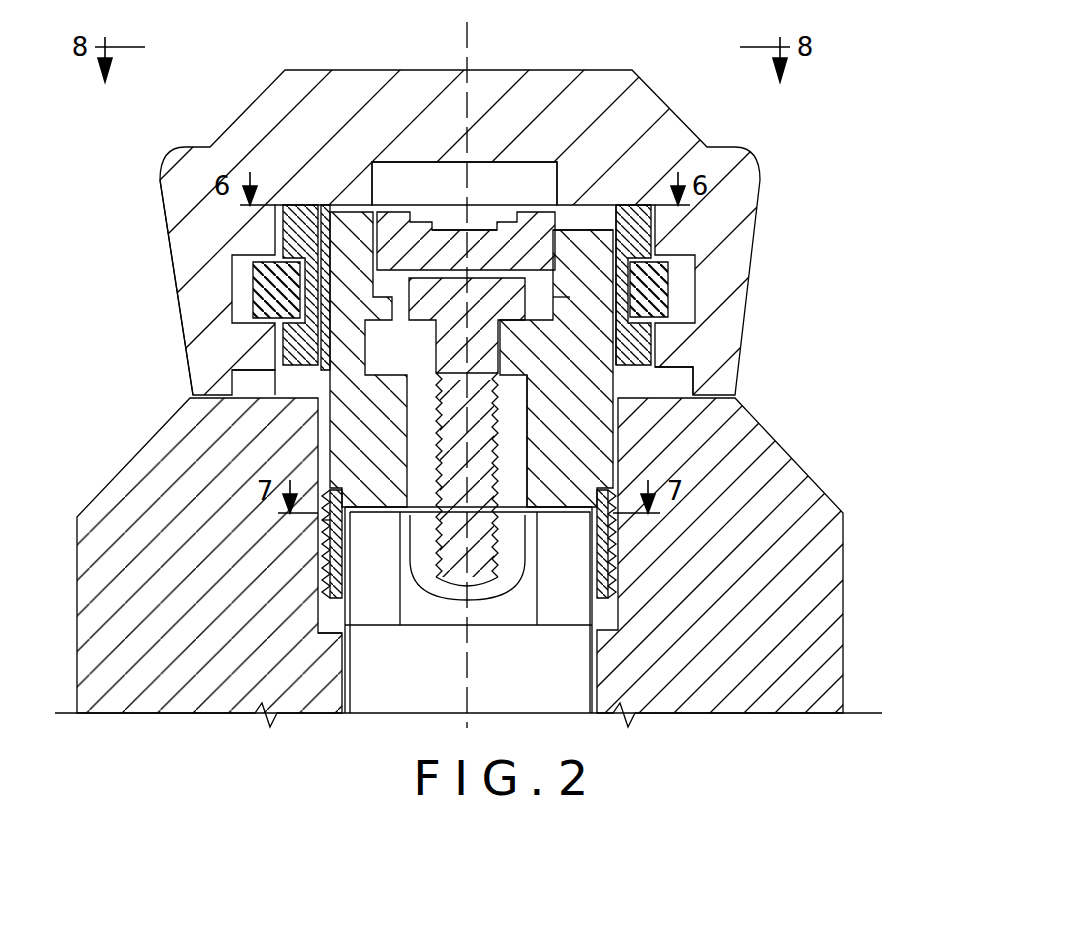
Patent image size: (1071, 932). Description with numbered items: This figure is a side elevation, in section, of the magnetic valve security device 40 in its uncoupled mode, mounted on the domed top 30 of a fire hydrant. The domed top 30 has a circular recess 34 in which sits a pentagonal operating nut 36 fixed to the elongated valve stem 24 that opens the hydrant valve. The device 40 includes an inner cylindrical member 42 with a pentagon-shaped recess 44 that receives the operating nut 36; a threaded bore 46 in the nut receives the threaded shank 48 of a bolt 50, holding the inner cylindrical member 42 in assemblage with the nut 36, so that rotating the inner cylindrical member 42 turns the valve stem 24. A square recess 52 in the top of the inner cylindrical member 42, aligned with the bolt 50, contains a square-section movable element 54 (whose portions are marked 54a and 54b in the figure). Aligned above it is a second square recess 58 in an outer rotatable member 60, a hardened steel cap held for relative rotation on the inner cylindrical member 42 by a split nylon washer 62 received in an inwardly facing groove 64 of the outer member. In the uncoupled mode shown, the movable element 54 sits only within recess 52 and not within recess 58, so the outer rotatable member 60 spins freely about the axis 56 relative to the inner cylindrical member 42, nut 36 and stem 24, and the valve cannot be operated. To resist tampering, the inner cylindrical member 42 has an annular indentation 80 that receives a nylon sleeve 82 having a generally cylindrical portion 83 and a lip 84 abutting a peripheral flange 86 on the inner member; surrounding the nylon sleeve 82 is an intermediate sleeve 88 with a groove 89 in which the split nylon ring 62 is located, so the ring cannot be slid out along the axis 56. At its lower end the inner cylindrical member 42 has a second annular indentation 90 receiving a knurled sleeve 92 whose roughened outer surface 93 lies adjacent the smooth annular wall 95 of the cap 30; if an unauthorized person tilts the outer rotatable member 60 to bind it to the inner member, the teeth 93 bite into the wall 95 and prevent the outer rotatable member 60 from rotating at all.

The elongated valve stem 24 is at (565, 712).
The domed top 30 is at (822, 645).
The circular recess 34 is at (318, 376).
The pentagonal operating nut 36 is at (553, 610).
The magnetic valve security device 40 is at (605, 64).
The inner cylindrical member 42 is at (387, 495).
The recess 44 is at (565, 505).
The threaded bore 46 is at (500, 525).
The threaded shank 48 is at (435, 400).
The bolt 50 is at (425, 312).
The square recess 52 is at (395, 212).
The movable element 54 is at (345, 236).
The ring portion 54a is at (556, 296).
The ring portion 54b is at (486, 216).
The axis 56 is at (480, 35).
The second square recess 58 is at (520, 195).
The outer rotatable member 60 is at (160, 238).
The split nylon washer 62 is at (256, 286).
The inwardly facing groove 64 is at (244, 265).
The annular indentation 80 is at (602, 320).
The nylon sleeve 82 is at (604, 234).
The generally cylindrical portion 83 is at (603, 362).
The lip 84 is at (622, 222).
The peripheral flange 86 is at (585, 225).
The intermediate sleeve 88 is at (648, 230).
The groove 89 is at (652, 340).
The second annular indentation 90 is at (328, 498).
The knurled sleeve 92 is at (318, 574).
The outer surface 93 is at (324, 520).
The smooth annular wall 95 is at (345, 622).